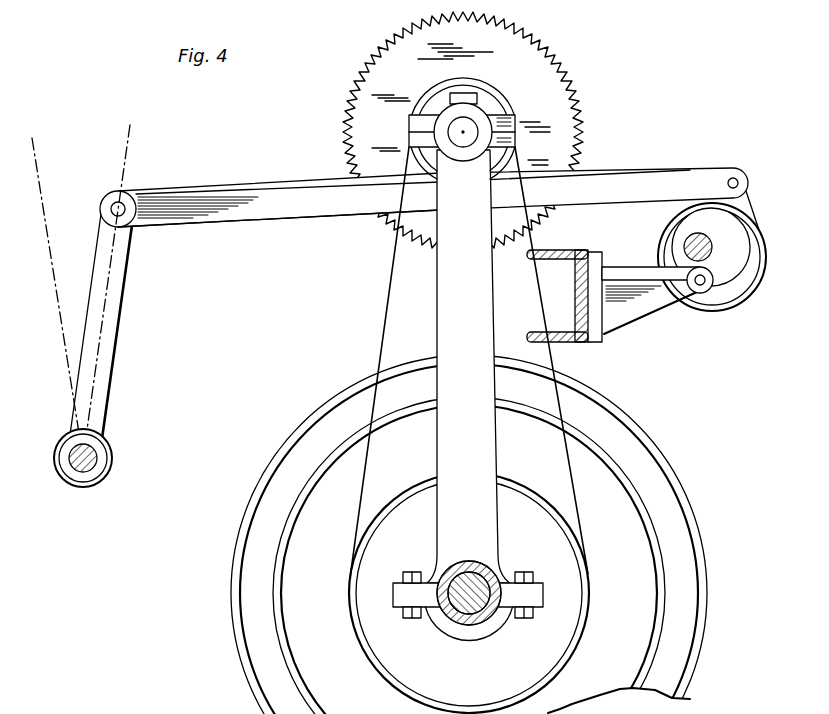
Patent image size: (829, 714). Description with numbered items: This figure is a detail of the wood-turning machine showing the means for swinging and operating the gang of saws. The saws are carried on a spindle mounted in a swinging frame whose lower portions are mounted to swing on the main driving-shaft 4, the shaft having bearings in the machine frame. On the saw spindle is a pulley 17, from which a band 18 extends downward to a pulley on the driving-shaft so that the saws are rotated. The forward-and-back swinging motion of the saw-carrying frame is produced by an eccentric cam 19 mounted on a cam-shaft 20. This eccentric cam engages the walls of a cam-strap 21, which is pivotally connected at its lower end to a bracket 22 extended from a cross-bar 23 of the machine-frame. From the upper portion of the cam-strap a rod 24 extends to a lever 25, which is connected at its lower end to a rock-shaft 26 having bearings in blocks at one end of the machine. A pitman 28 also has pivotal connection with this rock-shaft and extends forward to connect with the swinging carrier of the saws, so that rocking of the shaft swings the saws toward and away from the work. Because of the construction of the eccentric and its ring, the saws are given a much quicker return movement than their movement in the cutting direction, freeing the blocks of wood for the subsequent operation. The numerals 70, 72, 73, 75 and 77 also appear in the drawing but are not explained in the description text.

The main driving-shaft 4 is at (484, 584).
The pulley 17 is at (483, 110).
The band 18 is at (560, 363).
The eccentric cam 19 is at (727, 252).
The cam-shaft 20 is at (708, 243).
The cam-strap 21 is at (757, 280).
The bracket 22 is at (667, 313).
The cross-bar 23 is at (581, 252).
The rod 24 is at (350, 211).
The lever 25 is at (113, 373).
The rock-shaft 26 is at (98, 460).
The pitman 28 is at (286, 179).
The wheel rim 70 is at (704, 636).
The inner ring 72 is at (469, 593).
The gear 73 is at (577, 127).
The arm 75 is at (468, 366).
The wheel web 77 is at (469, 555).